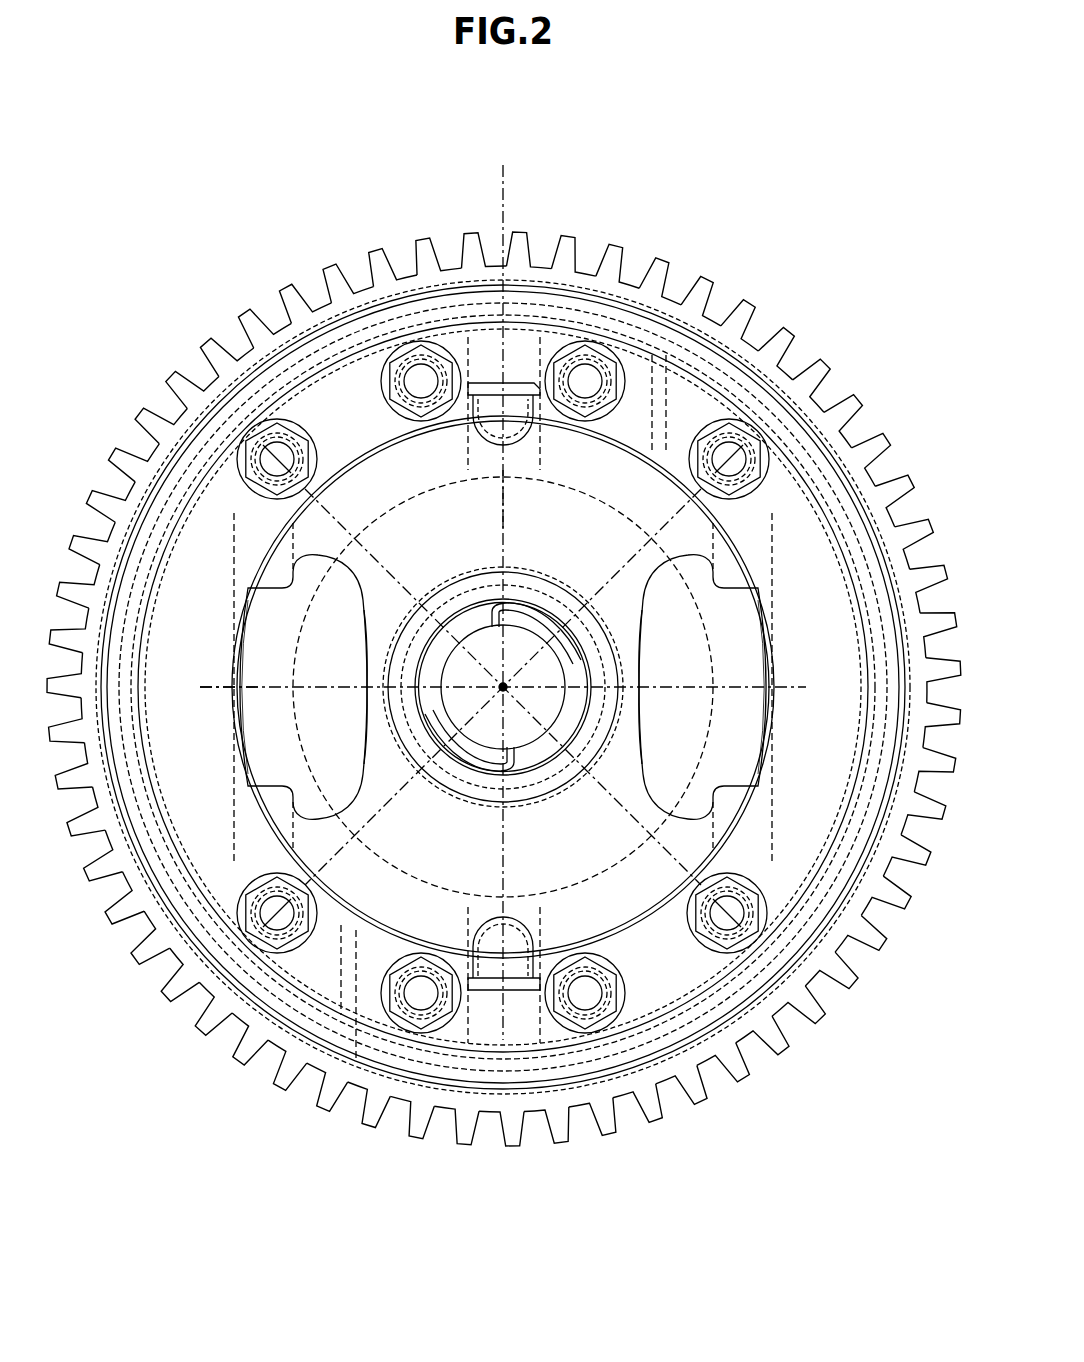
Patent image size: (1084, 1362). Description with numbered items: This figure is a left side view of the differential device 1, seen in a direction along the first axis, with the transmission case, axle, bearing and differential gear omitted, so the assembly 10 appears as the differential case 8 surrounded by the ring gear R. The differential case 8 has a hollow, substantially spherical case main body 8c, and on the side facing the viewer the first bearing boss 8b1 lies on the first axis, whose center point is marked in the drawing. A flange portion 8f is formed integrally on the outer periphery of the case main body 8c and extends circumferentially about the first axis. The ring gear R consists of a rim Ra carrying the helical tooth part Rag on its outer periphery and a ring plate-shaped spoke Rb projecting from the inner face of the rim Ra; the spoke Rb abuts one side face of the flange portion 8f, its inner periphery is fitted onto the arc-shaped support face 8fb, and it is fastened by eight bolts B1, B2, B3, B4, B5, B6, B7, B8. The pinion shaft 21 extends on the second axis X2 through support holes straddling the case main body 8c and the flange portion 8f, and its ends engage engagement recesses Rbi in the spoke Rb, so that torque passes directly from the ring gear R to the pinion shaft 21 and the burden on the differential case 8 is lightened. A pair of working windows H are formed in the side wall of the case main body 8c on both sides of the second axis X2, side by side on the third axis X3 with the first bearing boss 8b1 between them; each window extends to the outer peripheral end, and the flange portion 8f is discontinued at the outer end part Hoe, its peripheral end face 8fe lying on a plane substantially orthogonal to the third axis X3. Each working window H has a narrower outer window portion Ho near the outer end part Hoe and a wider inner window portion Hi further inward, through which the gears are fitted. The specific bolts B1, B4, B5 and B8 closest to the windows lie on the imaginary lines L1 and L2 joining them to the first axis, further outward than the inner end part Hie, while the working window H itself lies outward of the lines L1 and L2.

The differential device 1 is at (512, 180).
The gear (driven gear with teeth) 10 is at (752, 278).
The differential case 8 is at (367, 470).
The case main body 8c is at (590, 841).
The first bearing boss 8b1 is at (388, 734).
The flange portion 8f is at (355, 1065).
The arc-shaped support face 8fb is at (687, 440).
The end face 8fe is at (772, 515).
The pinion shaft 21 is at (536, 437).
The bolt B1 is at (260, 442).
The bolt B2 is at (402, 350).
The bolt B3 is at (600, 353).
The bolt B4 is at (752, 440).
The bolt B5 is at (762, 918).
The bolt B6 is at (597, 1027).
The bolt B7 is at (410, 1027).
The bolt B8 is at (267, 945).
The working window H is at (300, 574).
The inner window portion Hi is at (692, 562).
The outer window portion Ho is at (737, 599).
The inner end part Hie is at (358, 670).
The outer end part Hoe is at (232, 672).
The imaginary straight line L1 is at (404, 587).
The imaginary straight line L2 is at (602, 587).
The second axis X2 is at (512, 524).
The third axis X3 is at (214, 690).
The engagement recess Rbi is at (490, 390).
The tooth part Rag is at (95, 488).
The rim Ra is at (714, 1084).
The spoke Rb is at (668, 958).
The ring gear R is at (832, 1053).